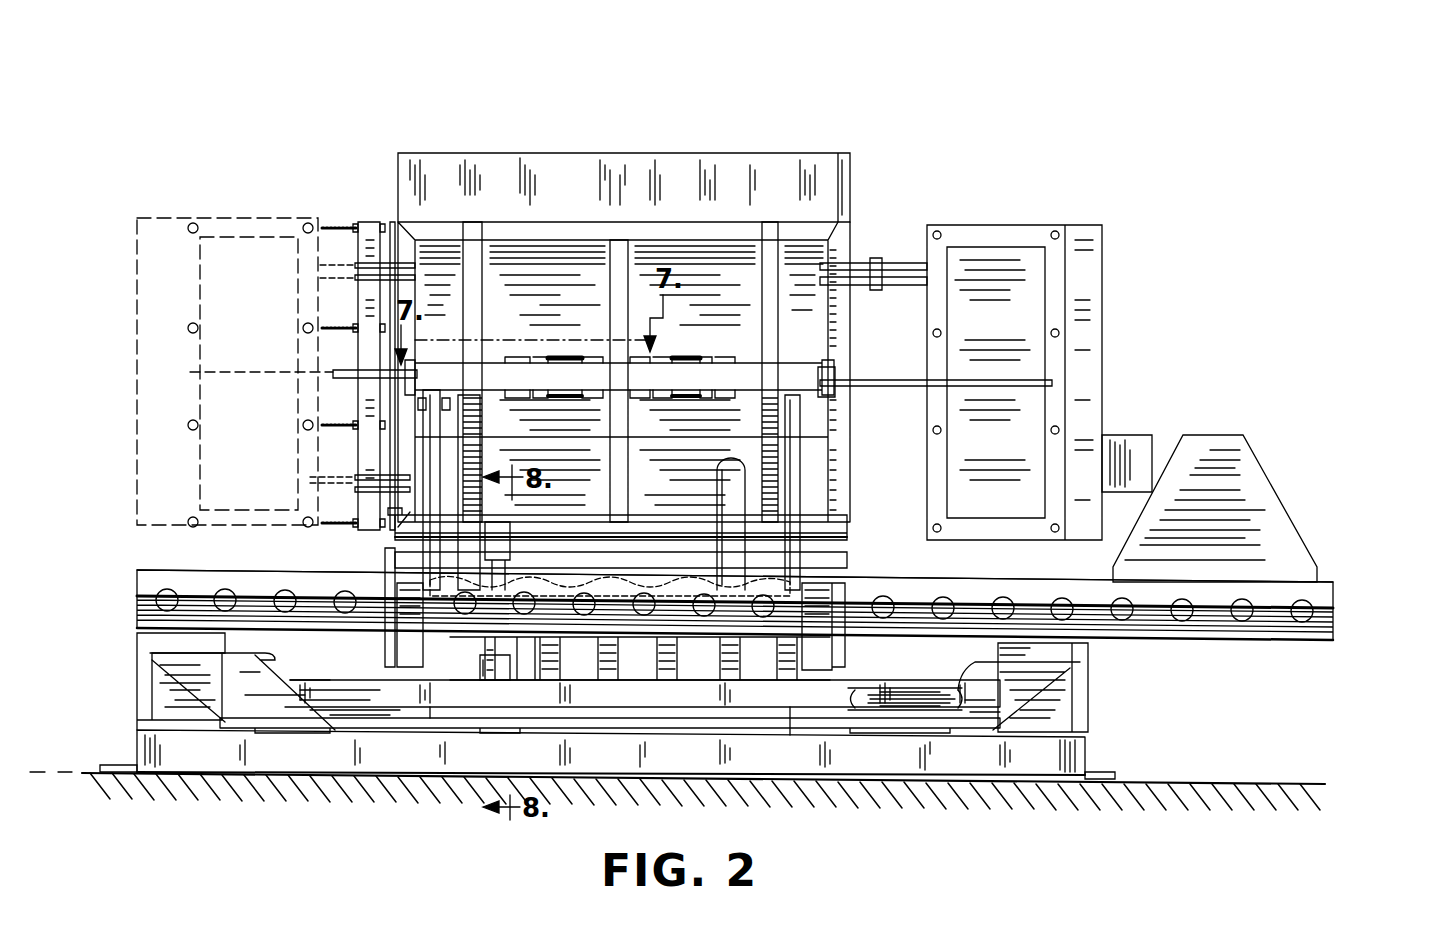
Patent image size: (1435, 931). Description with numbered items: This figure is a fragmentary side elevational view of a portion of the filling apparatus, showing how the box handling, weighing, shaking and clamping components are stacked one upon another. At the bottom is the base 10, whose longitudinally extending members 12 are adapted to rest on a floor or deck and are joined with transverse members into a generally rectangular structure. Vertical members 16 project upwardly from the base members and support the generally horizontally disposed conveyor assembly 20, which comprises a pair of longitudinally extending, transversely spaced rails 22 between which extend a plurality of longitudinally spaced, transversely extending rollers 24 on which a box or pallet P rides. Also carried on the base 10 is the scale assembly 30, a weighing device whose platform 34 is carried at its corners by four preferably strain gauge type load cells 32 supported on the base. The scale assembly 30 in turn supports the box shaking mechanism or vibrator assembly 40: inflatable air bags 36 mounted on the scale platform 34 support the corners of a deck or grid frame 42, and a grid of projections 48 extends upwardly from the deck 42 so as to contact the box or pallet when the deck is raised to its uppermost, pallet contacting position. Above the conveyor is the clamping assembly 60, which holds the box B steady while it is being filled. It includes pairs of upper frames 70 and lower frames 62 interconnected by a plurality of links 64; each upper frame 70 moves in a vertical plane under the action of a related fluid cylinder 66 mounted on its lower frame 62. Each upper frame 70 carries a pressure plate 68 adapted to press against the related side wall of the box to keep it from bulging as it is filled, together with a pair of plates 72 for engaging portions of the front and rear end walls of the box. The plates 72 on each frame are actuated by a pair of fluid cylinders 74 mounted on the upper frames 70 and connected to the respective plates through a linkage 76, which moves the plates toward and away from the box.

The base 10 is at (1040, 752).
The longitudinally extending members 12 is at (140, 742).
The vertical members 16 is at (140, 683).
The conveyor assembly 20 is at (1333, 593).
The rails 22 is at (137, 612).
The rollers 24 is at (285, 590).
The scale assembly 30 is at (790, 732).
The load cells 32 is at (1065, 705).
The platform 34 is at (697, 735).
The inflatable air bags 36 is at (915, 712).
The vibrator assembly 40 is at (435, 712).
The deck 42 is at (615, 700).
The projections 48 is at (657, 670).
The clamping assembly 60 is at (560, 282).
The lower frames 62 is at (410, 648).
The links 64 is at (395, 533).
The fluid cylinder 66 is at (490, 672).
The pressure plate 68 is at (696, 265).
The upper frames 70 is at (473, 277).
The plates 72 is at (240, 218).
The fluid cylinders 74 is at (555, 357).
The linkage 76 is at (265, 372).
The mold block B is at (757, 158).
The pallet P is at (550, 575).